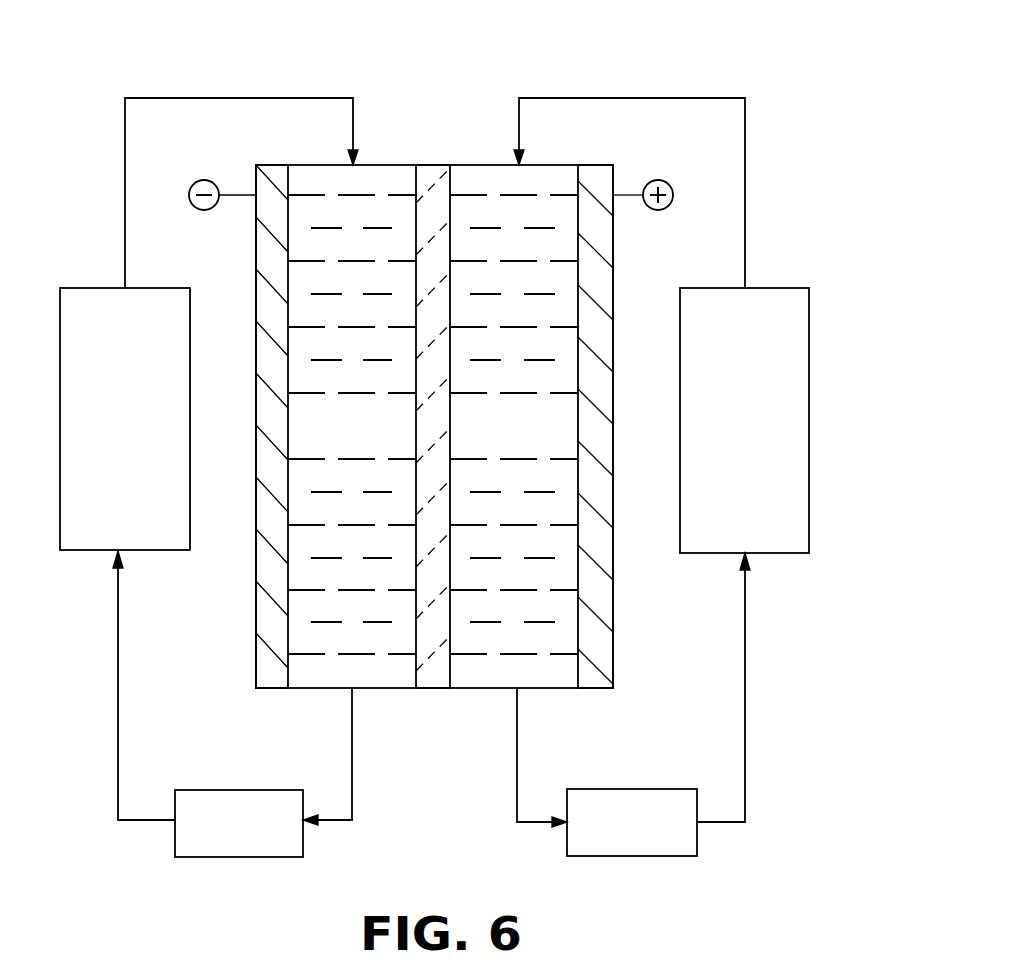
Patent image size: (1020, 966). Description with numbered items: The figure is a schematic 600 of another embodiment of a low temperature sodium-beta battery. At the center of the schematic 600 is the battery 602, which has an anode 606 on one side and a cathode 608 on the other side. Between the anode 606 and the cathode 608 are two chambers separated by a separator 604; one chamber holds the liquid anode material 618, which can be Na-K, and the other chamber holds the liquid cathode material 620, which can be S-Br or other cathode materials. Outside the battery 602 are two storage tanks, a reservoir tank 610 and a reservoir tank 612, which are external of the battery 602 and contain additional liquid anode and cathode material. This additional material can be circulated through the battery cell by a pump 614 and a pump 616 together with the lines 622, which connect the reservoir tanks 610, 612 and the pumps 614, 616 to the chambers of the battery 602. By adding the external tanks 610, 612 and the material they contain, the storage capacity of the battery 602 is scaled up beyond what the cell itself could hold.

The schematic 600 is at (560, 30).
The battery 602 is at (393, 83).
The separator 604 is at (437, 165).
The anode 606 is at (256, 620).
The cathode 608 is at (613, 619).
The reservoir tank 610 is at (153, 336).
The reservoir tank 612 is at (766, 338).
The pump 614 is at (268, 858).
The pump 616 is at (604, 857).
The liquid Na-K anode material 618 is at (368, 448).
The liquid S-Br or other cathode material 620 is at (531, 448).
The lines 622 is at (125, 178).